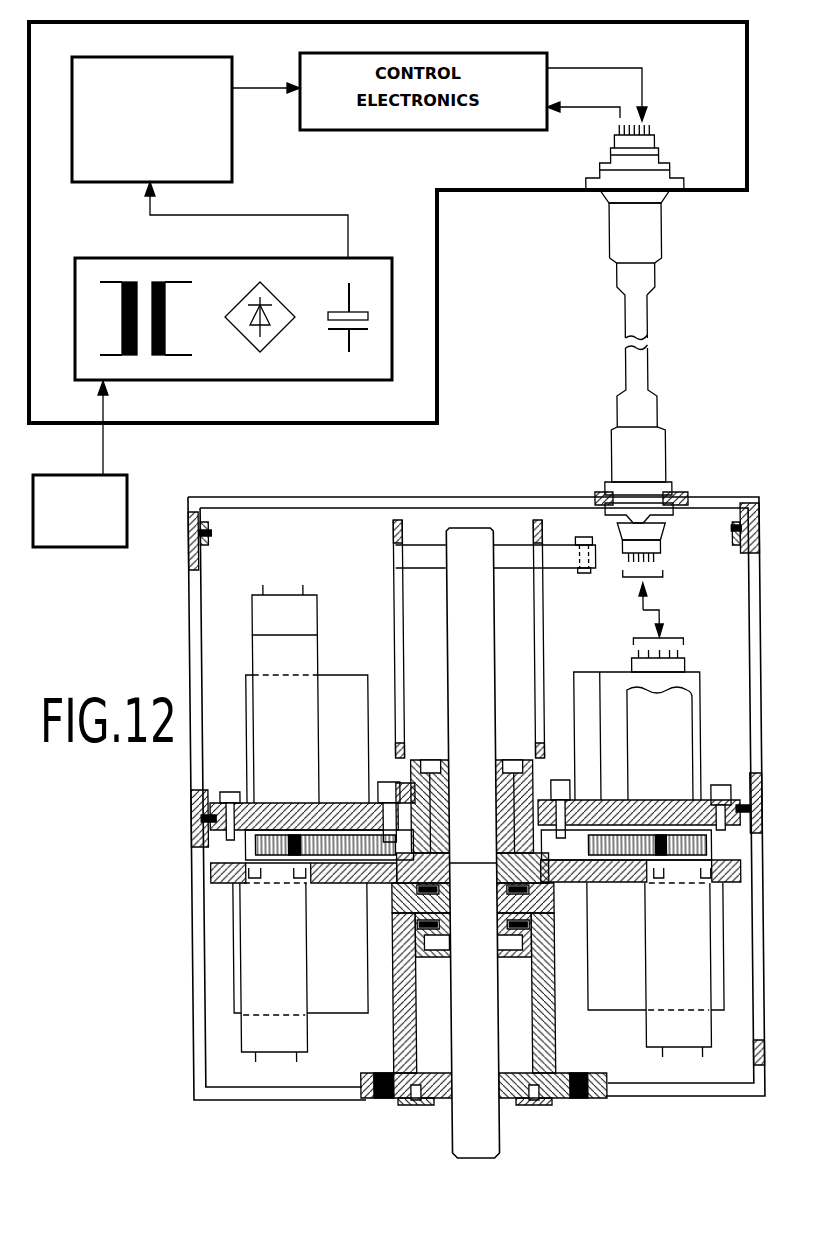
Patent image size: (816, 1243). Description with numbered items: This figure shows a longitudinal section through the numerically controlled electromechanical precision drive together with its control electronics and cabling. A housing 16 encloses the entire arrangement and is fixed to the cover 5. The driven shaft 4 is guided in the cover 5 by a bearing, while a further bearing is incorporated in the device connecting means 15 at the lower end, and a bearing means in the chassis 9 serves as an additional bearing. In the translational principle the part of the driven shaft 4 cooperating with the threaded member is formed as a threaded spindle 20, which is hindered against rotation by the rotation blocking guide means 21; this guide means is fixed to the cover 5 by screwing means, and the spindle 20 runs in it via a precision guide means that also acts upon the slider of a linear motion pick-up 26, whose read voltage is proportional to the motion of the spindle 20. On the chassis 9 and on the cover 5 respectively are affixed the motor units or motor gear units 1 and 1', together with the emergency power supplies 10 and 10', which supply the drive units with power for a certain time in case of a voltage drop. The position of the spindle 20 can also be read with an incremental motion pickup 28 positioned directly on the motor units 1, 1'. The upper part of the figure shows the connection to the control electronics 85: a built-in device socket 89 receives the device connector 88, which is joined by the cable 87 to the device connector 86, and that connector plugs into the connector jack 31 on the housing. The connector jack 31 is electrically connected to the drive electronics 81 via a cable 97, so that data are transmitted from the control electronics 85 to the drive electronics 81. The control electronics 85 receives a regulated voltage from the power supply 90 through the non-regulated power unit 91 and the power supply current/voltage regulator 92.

The motor unit 1 is at (263, 972).
The motor unit 1' is at (300, 718).
The driven shaft 4 is at (456, 1139).
The cover 5 is at (287, 802).
The chassis 9 is at (596, 880).
The emergency power supply 10 is at (654, 970).
The emergency power supply 10' is at (315, 723).
The device connecting means 15 is at (409, 1010).
The housing 16 is at (192, 664).
The threaded spindle 20 is at (458, 655).
The rotation blocking guide means 21 is at (398, 612).
The linear motion pick-up 26 is at (578, 685).
The incremental motion pickup 28 is at (256, 614).
The connector jack 31 is at (675, 490).
The drive electronics 81 is at (690, 683).
The control electronics 85 is at (437, 230).
The device connector 86 is at (657, 447).
The cable 87 is at (642, 362).
The device connector 88 is at (650, 227).
The built-in device socket 89 is at (647, 153).
The power supply 90 is at (110, 547).
The non-regulated power unit 91 is at (228, 380).
The power supply current/voltage regulator 92 is at (222, 142).
The cable 97 is at (650, 612).